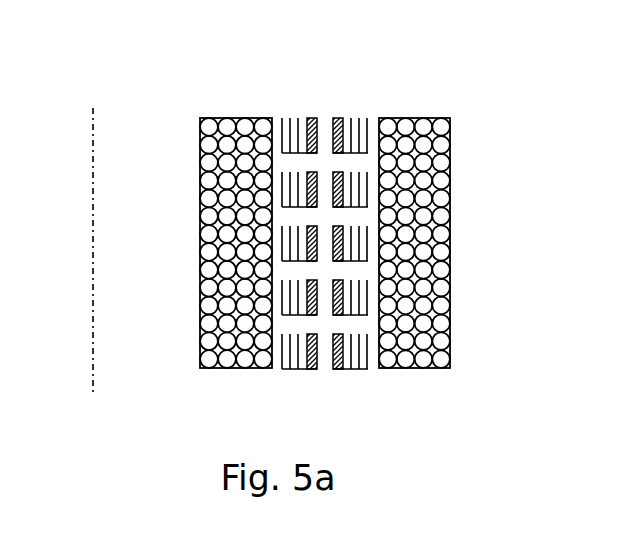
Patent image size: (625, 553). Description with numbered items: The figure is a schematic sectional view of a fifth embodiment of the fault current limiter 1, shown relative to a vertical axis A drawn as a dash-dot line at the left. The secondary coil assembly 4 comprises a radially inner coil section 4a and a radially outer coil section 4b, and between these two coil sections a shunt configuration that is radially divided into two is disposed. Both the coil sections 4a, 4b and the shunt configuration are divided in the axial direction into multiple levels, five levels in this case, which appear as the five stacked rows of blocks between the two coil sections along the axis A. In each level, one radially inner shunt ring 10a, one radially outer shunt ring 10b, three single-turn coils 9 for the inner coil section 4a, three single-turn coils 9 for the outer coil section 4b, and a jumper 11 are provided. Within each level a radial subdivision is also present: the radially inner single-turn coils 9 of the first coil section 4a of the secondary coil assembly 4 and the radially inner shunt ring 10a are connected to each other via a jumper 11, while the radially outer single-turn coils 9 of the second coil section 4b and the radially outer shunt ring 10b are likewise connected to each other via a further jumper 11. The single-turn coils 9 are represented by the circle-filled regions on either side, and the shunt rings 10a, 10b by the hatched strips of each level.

The fault current limiter 1 is at (475, 88).
The secondary coil assembly 4 is at (292, 249).
The inner coil section 4a is at (294, 249).
The outer coil section 4b is at (358, 249).
The single-turn coil 9 is at (266, 128).
The radially inner shunt ring 10a is at (312, 124).
The radially outer shunt ring 10b is at (340, 124).
The jumper 11 is at (291, 170).
The vertical axis A is at (93, 192).